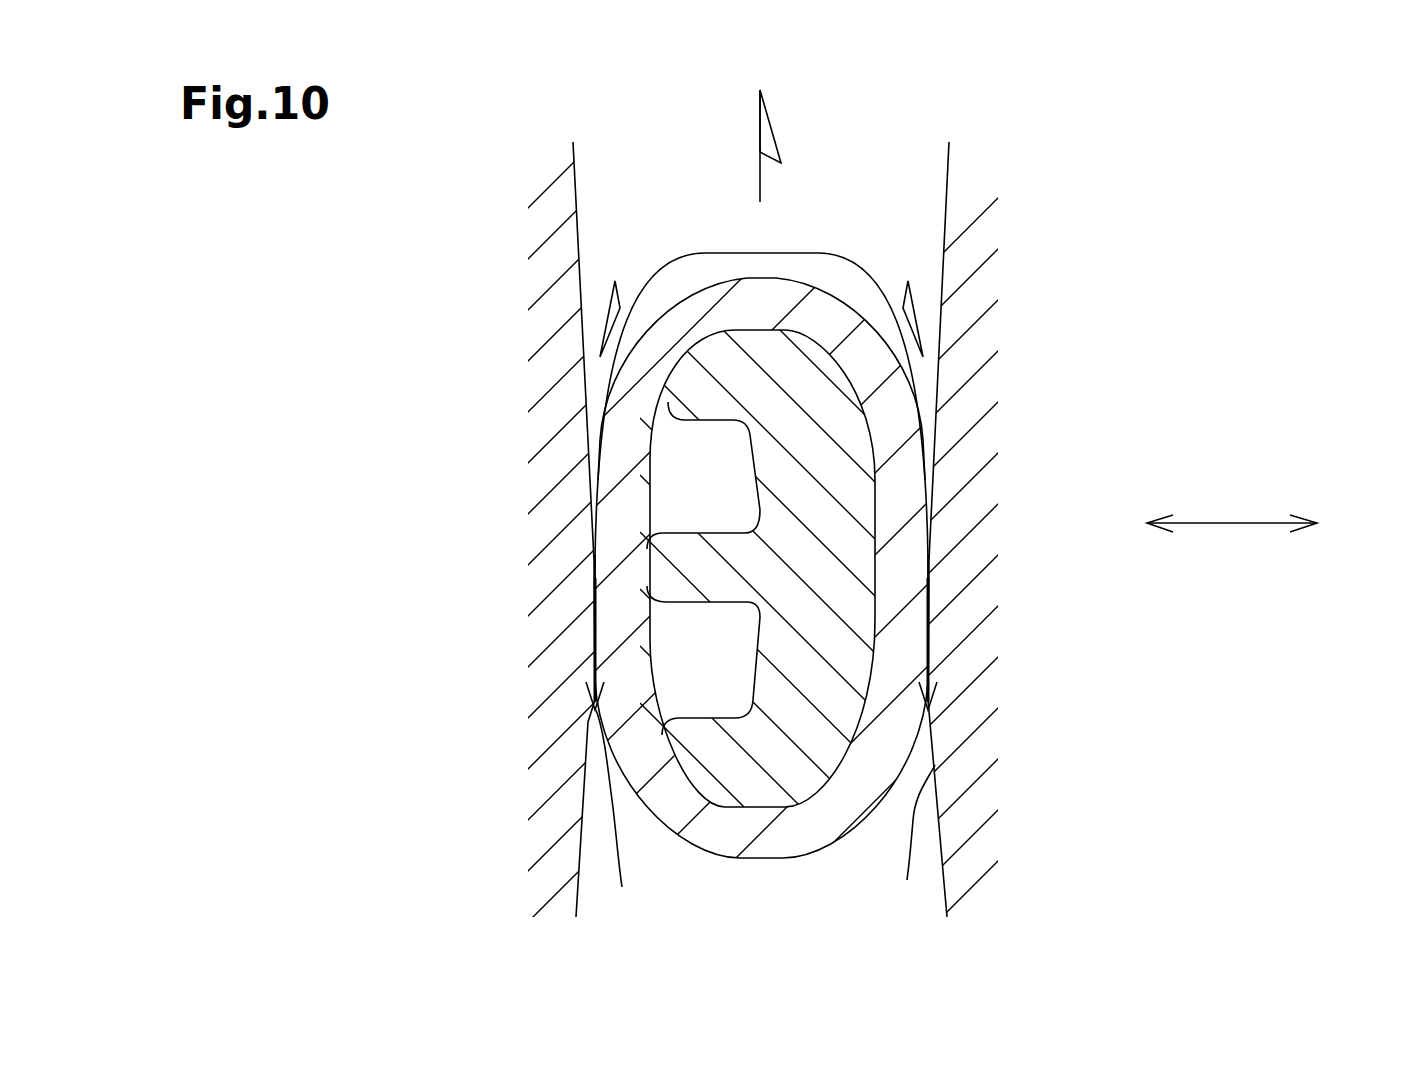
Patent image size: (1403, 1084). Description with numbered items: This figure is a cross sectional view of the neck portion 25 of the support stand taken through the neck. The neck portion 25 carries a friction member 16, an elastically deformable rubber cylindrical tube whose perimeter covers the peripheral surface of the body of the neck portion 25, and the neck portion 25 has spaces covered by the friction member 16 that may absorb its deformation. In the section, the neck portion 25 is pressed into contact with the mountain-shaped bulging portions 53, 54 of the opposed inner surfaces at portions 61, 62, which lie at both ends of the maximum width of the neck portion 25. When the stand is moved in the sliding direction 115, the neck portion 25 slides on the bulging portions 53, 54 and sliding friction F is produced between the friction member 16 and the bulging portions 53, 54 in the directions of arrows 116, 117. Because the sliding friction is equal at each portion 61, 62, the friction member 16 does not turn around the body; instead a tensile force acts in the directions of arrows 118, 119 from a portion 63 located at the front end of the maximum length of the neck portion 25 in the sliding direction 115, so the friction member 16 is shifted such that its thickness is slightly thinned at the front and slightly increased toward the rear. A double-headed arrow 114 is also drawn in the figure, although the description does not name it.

The friction member 16 is at (695, 830).
The neck portion 25 is at (782, 873).
The bulging portion 53 is at (621, 815).
The bulging portion 54 is at (917, 836).
The portion 61 is at (592, 569).
The portion 62 is at (930, 570).
The portion 63 is at (758, 272).
The width direction 114 is at (1232, 523).
The sliding direction 115 is at (760, 174).
The arrow 116 is at (592, 648).
The arrow 117 is at (930, 648).
The arrow 118 is at (667, 265).
The arrow 119 is at (850, 263).